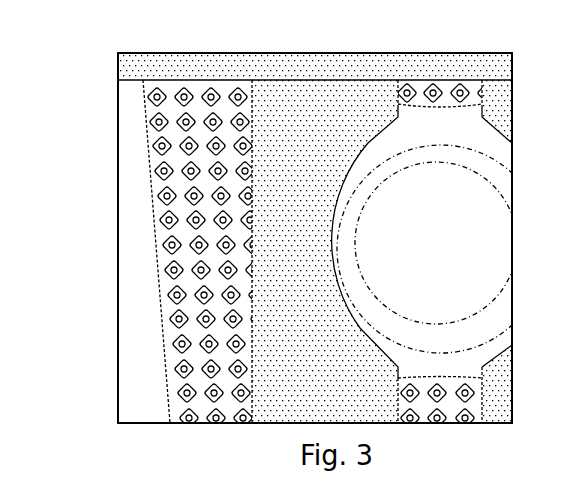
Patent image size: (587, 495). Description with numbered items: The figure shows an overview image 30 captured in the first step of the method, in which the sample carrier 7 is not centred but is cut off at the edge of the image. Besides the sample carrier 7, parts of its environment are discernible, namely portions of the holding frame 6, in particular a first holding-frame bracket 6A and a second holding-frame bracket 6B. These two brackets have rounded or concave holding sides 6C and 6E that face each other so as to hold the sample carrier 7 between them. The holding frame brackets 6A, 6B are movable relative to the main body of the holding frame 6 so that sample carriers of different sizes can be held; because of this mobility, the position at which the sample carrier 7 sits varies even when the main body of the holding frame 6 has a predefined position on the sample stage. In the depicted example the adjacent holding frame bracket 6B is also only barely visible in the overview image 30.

The overview image 30 is at (104, 111).
The holding frame 6 is at (234, 50).
The first holding-frame bracket 6A is at (340, 75).
The second holding-frame bracket 6B is at (487, 76).
The holding side 6C is at (344, 183).
The holding side 6E is at (510, 138).
The sample carrier 7 is at (472, 343).